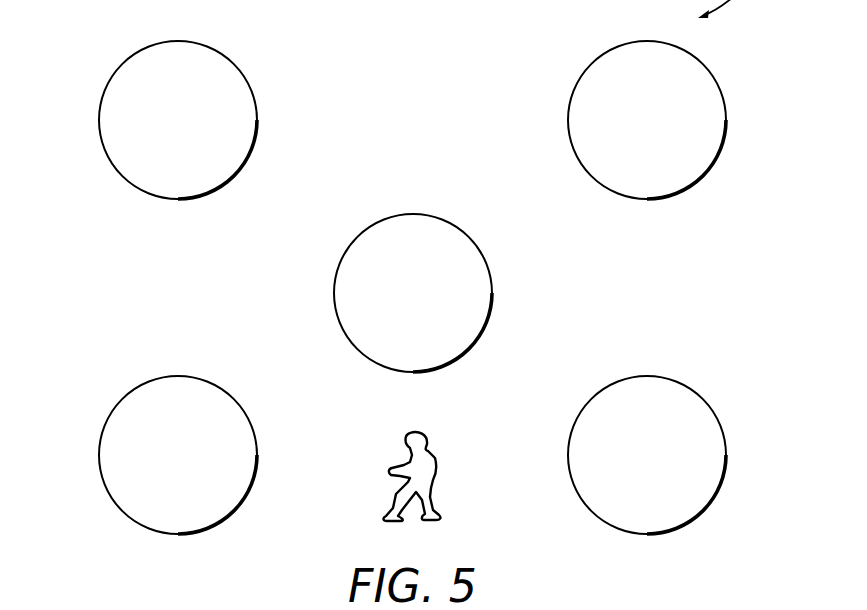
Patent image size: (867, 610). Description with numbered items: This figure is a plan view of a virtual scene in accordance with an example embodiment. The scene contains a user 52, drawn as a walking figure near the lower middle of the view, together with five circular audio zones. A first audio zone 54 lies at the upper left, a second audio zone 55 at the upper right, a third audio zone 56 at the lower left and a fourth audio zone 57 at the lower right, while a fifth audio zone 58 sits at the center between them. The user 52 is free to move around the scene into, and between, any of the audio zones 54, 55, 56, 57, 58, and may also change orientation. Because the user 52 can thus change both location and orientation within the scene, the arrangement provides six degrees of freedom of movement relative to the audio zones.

The user 52 is at (437, 464).
The first audio zone 54 is at (100, 122).
The second audio zone 55 is at (726, 121).
The third audio zone 56 is at (100, 456).
The fourth audio zone 57 is at (726, 456).
The fifth audio zone 58 is at (334, 293).